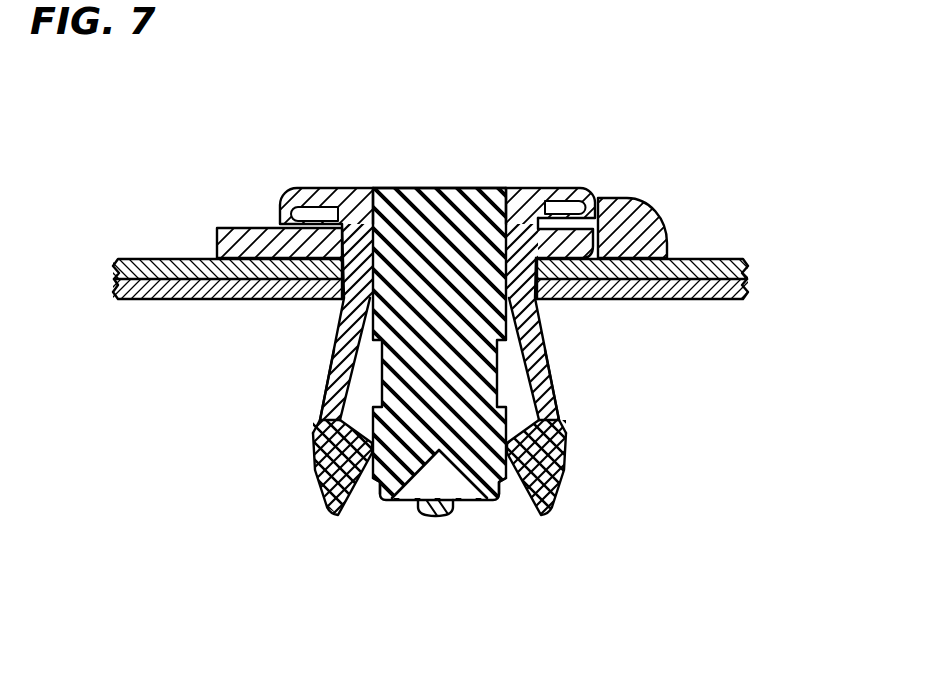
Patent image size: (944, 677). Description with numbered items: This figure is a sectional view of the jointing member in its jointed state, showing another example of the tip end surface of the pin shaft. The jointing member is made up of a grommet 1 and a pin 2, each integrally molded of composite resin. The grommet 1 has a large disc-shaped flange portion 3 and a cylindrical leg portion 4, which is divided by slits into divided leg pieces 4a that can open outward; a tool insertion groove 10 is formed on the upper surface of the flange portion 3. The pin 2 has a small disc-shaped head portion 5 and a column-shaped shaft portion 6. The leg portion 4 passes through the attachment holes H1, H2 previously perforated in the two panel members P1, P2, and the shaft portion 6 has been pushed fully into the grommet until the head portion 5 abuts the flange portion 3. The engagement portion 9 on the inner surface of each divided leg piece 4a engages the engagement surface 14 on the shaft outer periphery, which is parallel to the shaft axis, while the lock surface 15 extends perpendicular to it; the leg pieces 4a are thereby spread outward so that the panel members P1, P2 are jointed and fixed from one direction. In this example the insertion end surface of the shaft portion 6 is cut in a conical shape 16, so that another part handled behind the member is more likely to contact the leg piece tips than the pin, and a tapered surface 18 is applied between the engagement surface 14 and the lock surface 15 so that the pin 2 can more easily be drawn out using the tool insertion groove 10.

The grommet 1 is at (451, 352).
The pin 2 is at (438, 308).
The flange portion 3 is at (631, 209).
The leg portion 4 is at (549, 354).
The divided leg pieces 4a is at (557, 396).
The head portion 5 is at (373, 188).
The shaft portion 6 is at (436, 193).
The engagement portion 9 is at (508, 463).
The tool insertion groove 10 is at (246, 228).
The engagement surface 14 is at (567, 434).
The lock surface 15 is at (511, 483).
The conical shape 16 is at (411, 500).
The tapered surface 18 is at (512, 469).
The panel member P1 is at (143, 268).
The panel member P2 is at (727, 302).
The attachment hole H1 is at (337, 280).
The attachment hole H2 is at (566, 296).